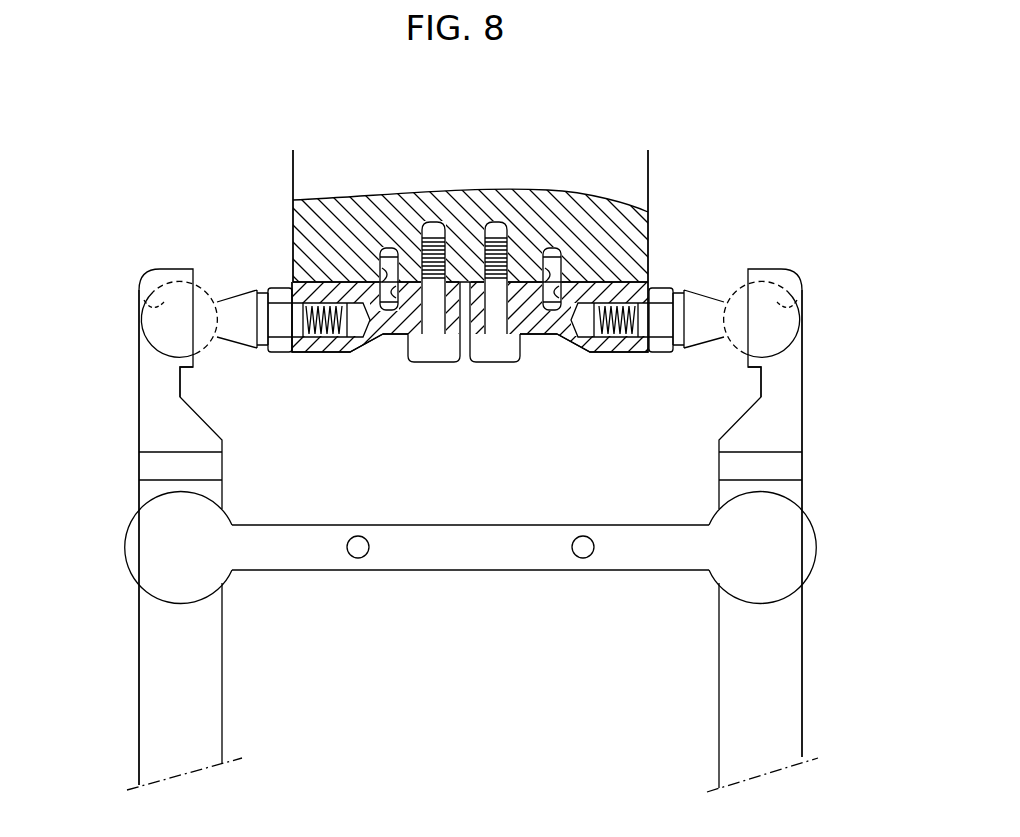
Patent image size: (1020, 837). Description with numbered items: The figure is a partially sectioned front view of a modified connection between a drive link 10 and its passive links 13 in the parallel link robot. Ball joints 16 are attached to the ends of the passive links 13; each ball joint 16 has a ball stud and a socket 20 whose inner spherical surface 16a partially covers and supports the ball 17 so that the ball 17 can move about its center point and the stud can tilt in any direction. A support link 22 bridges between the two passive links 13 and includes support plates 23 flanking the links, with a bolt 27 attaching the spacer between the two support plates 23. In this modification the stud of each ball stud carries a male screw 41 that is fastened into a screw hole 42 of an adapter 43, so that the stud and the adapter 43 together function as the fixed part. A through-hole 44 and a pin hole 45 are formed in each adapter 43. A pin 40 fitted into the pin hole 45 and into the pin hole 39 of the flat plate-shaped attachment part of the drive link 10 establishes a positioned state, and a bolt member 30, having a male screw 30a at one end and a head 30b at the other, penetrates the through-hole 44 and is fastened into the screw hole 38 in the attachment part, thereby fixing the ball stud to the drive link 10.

The drive link 10 is at (286, 182).
The passive link 13 is at (879, 668).
The ball joint 16 is at (233, 385).
The inner spherical surface 16a is at (152, 292).
The ball 17 is at (203, 343).
The socket 20 is at (139, 330).
The support link 22 is at (300, 590).
The support plate 23 is at (470, 571).
The bolt 27 is at (358, 558).
The bolt member 30 is at (445, 380).
The male screw 30a is at (419, 280).
The head 30b is at (402, 343).
The screw hole 38 is at (434, 221).
The pin hole 39 is at (380, 266).
The pin 40 is at (387, 248).
The male screw 41 is at (317, 338).
The screw hole 42 is at (326, 345).
The adapter 43 is at (380, 337).
The through-hole 44 is at (432, 345).
The pin hole 45 is at (279, 289).